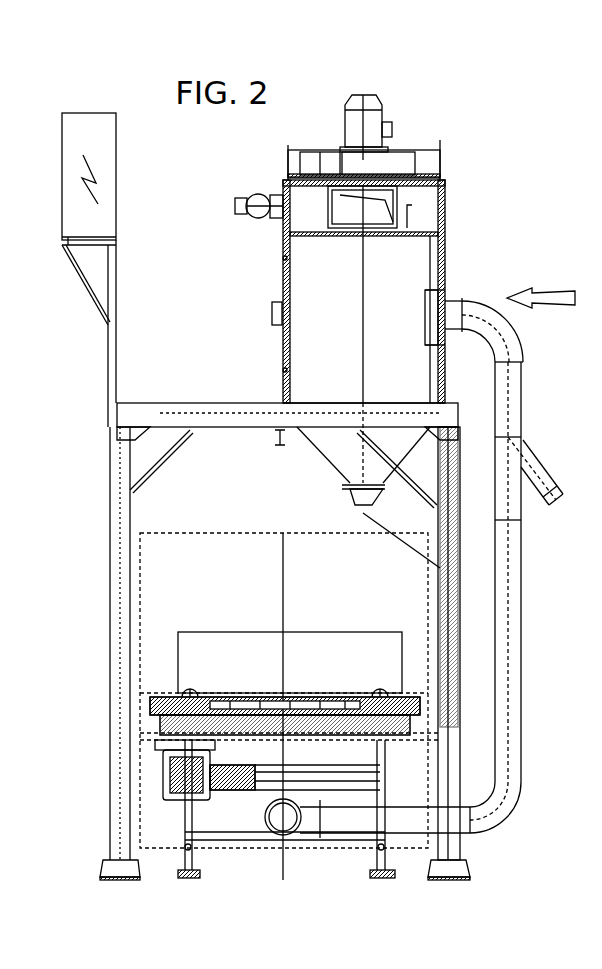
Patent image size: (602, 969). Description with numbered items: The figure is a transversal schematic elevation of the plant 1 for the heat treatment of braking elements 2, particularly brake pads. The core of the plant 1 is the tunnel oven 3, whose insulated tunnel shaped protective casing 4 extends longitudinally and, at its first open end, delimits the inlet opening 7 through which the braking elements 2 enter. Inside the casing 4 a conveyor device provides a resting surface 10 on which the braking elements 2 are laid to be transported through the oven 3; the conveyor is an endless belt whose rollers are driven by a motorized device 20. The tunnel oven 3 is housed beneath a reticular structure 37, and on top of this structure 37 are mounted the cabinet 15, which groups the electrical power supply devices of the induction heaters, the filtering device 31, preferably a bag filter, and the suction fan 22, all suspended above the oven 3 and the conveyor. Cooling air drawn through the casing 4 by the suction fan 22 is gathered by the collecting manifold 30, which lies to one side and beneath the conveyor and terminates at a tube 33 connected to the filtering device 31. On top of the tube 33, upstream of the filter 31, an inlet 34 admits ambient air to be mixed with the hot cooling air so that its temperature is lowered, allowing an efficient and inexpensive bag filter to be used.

The plant 1 is at (499, 185).
The braking elements 2 is at (222, 697).
The tunnel oven 3 is at (161, 604).
The tunnel shaped protective casing 4 is at (205, 557).
The inlet opening 7 is at (339, 650).
The resting surface 10 is at (337, 690).
The cabinet 15 is at (88, 113).
The motorized device 20 is at (153, 790).
The suction fan 22 is at (406, 123).
The collecting manifold 30 is at (251, 851).
The filtering device 31 is at (300, 291).
The tube 33 is at (513, 643).
The inlet 34 is at (555, 510).
The reticular structure 37 is at (118, 522).